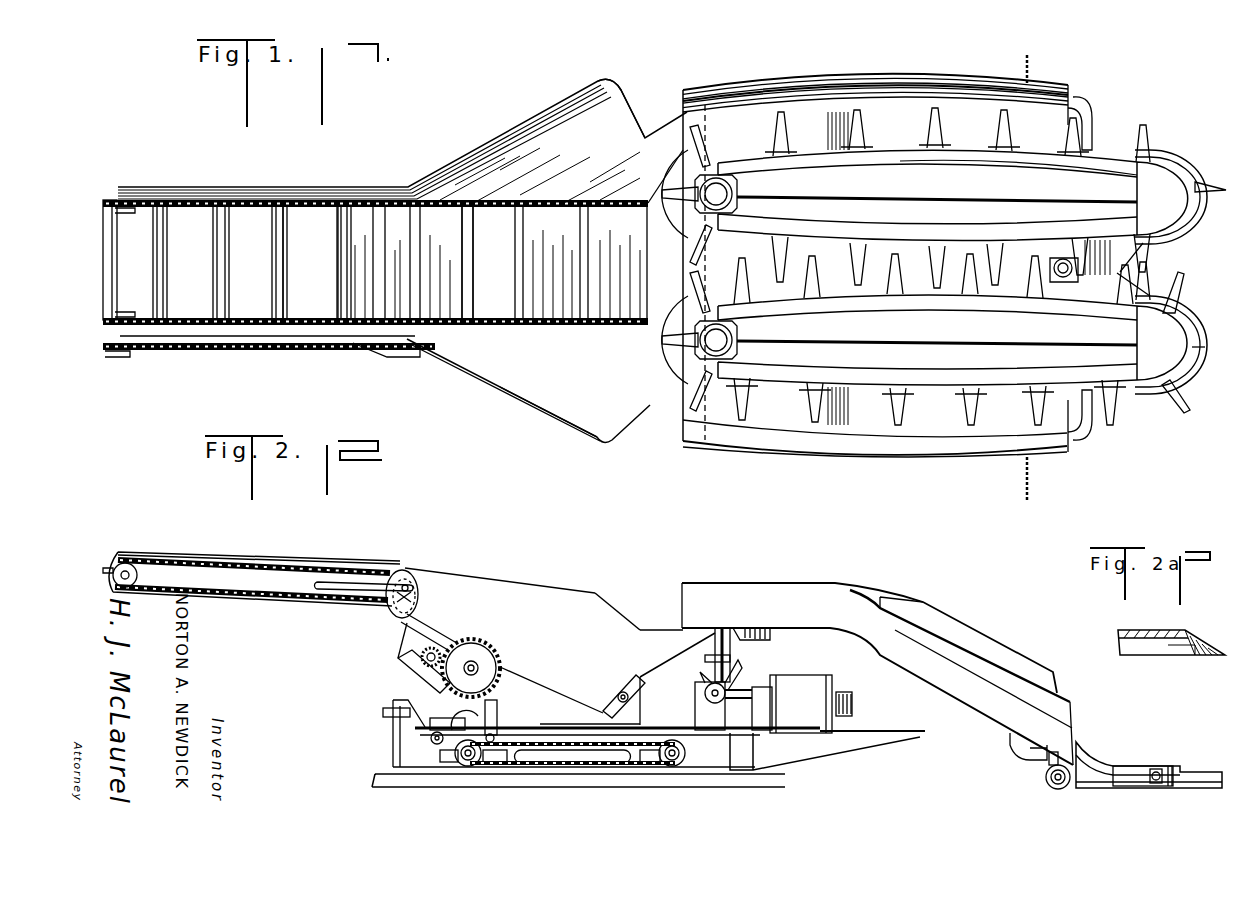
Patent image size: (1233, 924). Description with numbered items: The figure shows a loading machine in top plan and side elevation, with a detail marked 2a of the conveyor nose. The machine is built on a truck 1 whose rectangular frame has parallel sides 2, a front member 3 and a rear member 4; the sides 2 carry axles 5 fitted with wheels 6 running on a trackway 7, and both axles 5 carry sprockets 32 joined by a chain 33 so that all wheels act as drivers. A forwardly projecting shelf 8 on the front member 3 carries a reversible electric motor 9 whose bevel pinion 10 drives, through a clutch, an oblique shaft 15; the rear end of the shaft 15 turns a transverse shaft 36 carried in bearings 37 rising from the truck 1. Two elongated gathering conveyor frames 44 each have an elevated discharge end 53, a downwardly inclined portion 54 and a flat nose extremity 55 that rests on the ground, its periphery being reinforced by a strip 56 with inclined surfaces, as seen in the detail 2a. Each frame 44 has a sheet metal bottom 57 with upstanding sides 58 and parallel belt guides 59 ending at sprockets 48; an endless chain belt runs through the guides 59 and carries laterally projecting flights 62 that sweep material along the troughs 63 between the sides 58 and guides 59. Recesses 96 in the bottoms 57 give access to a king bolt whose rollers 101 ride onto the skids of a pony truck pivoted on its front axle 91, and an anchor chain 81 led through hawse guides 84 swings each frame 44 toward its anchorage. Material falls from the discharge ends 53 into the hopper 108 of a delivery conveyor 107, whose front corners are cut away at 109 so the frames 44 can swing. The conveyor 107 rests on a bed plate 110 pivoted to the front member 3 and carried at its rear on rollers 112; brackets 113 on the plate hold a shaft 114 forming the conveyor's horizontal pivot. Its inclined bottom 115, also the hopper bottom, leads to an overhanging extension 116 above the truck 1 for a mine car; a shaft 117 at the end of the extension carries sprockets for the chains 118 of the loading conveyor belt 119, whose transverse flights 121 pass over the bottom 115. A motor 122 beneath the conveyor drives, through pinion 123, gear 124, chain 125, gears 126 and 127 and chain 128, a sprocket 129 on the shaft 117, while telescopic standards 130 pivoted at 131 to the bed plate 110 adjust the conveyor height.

In FIG. 2, the truck 1 is at (400, 737).
In FIG. 2, the sides 2 is at (617, 741).
In FIG. 2, the front member 3 is at (747, 755).
In FIG. 2, the rear member 4 is at (393, 705).
In FIG. 2, the axles 5 is at (460, 768).
In FIG. 2, the wheels 6 is at (680, 770).
In FIG. 1, the trackway 7 is at (424, 360).
In FIG. 2, the trackway 7 is at (523, 780).
In FIG. 2, the shelf 8 is at (882, 738).
In FIG. 2, the electric motor 9 is at (801, 704).
In FIG. 2, the bevel pinion 10 is at (855, 704).
In FIG. 2, the shaft 15 is at (732, 684).
In FIG. 2, the sprockets 32 is at (667, 770).
In FIG. 2, the chain 33 is at (613, 768).
In FIG. 2, the shaft 36 is at (730, 683).
In FIG. 2, the bearings 37 is at (697, 703).
In FIG. 1, the gathering conveyor frames 44 is at (882, 86).
In FIG. 2, the gathering conveyor frames 44 is at (960, 646).
In FIG. 1, the sprockets 48 is at (728, 192).
In FIG. 1, the discharge ends 53 is at (703, 422).
In FIG. 2, the discharge ends 53 is at (737, 582).
In FIG. 2, the inclined portions 54 is at (945, 653).
In FIG. 1, the nose extremities 55 is at (1120, 147).
In FIG. 2, the nose extremities 55 is at (1100, 766).
In FIG. 2A, the nose extremities 55 is at (1135, 633).
In FIG. 1, the strips 56 is at (1172, 400).
In FIG. 2, the strips 56 is at (1138, 788).
In FIG. 2A, the strips 56 is at (1195, 636).
In FIG. 1, the bottom 57 is at (930, 466).
In FIG. 1, the sides 58 is at (972, 88).
In FIG. 2, the sides 58 is at (1003, 683).
In FIG. 1, the belt guides 59 is at (962, 165).
In FIG. 1, the flights 62 is at (772, 128).
In FIG. 2, the flights 62 is at (1200, 775).
In FIG. 1, the troughs 63 is at (858, 128).
In FIG. 1, the anchor chain 81 is at (1032, 62).
In FIG. 2, the hawse guides 84 is at (1025, 758).
In FIG. 2, the front axle 91 is at (1050, 765).
In FIG. 1, the recesses 96 is at (1058, 255).
In FIG. 2, the rollers 101 is at (1056, 790).
In FIG. 1, the delivery conveyor 107 is at (572, 322).
In FIG. 2, the delivery conveyor 107 is at (443, 575).
In FIG. 1, the hopper 108 is at (568, 422).
In FIG. 2, the hopper 108 is at (573, 608).
In FIG. 1, the cut-away portions 109 is at (644, 100).
In FIG. 2, the cut-away portions 109 is at (635, 612).
In FIG. 2, the bed plate 110 is at (563, 722).
In FIG. 2, the rollers 112 is at (440, 737).
In FIG. 2, the brackets 113 is at (677, 656).
In FIG. 2, the shaft 114 is at (620, 686).
In FIG. 1, the bottom 115 is at (490, 215).
In FIG. 1, the overhanging extension 116 is at (303, 282).
In FIG. 2, the overhanging extension 116 is at (267, 587).
In FIG. 2, the shaft 117 is at (137, 563).
In FIG. 1, the chains 118 is at (315, 210).
In FIG. 1, the loading conveyor belt 119 is at (248, 203).
In FIG. 1, the flights 121 is at (470, 322).
In FIG. 2, the motor 122 is at (408, 648).
In FIG. 2, the pinion 123 is at (398, 658).
In FIG. 2, the gear 124 is at (463, 650).
In FIG. 2, the endless chain 125 is at (433, 622).
In FIG. 2, the gear 126 is at (428, 585).
In FIG. 2, the second gear 127 is at (420, 563).
In FIG. 1, the endless chain 128 is at (305, 350).
In FIG. 2, the endless chain 128 is at (267, 563).
In FIG. 2, the sprocket 129 is at (127, 568).
In FIG. 2, the telescopic standards 130 is at (497, 698).
In FIG. 2, the pivots 131 is at (497, 718).
In FIG. 1, the section line 2a is at (1199, 348).